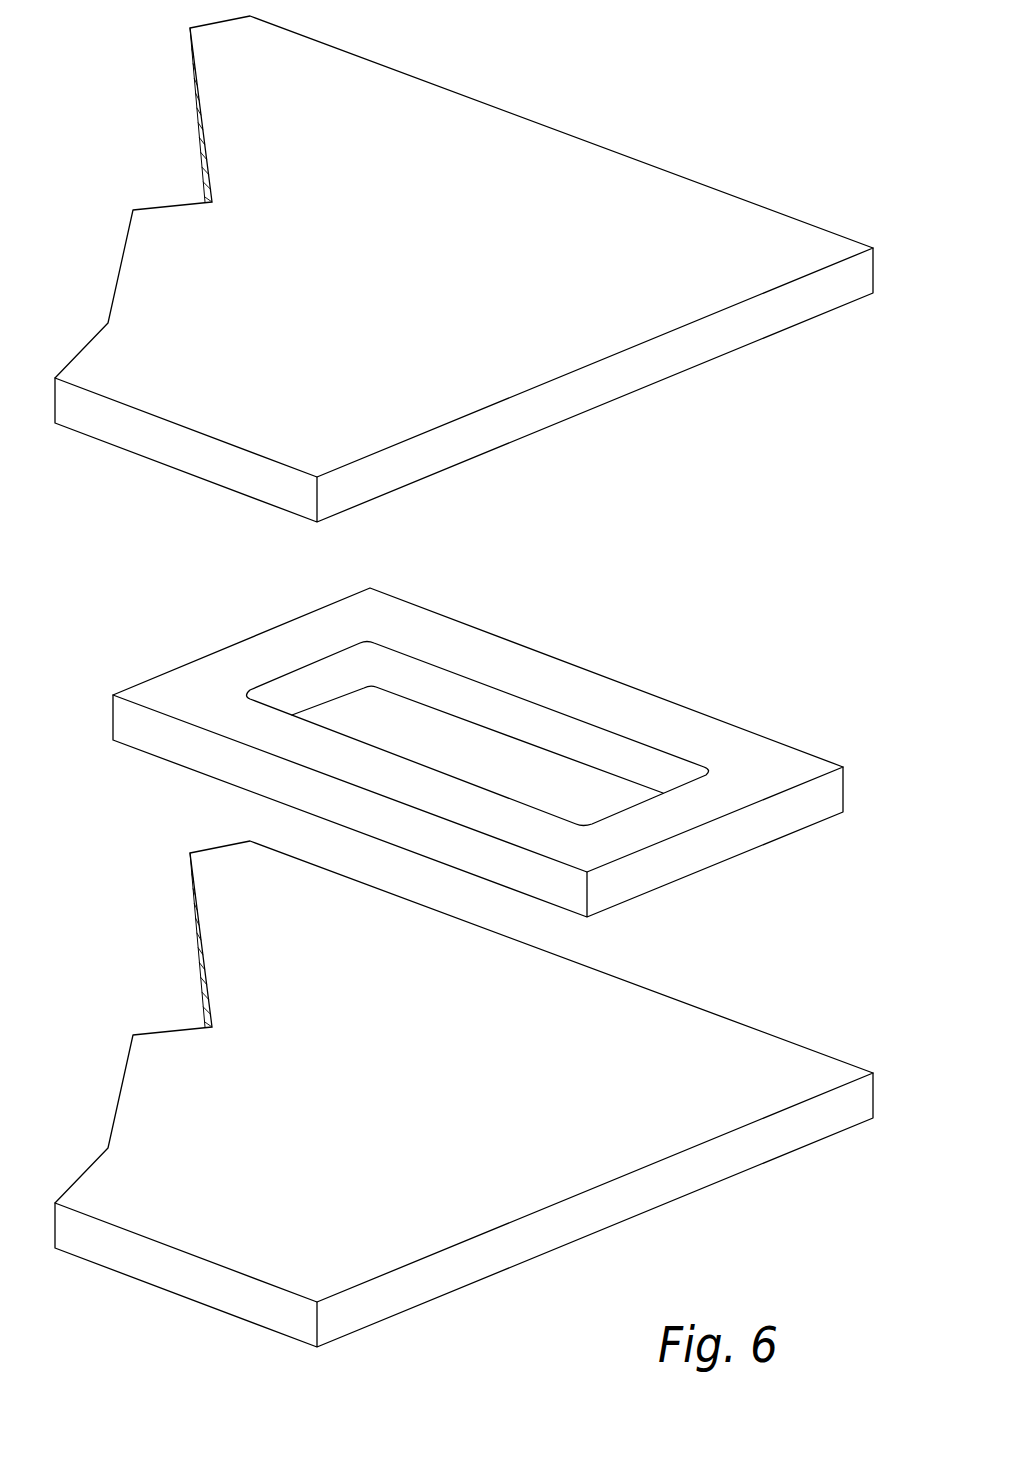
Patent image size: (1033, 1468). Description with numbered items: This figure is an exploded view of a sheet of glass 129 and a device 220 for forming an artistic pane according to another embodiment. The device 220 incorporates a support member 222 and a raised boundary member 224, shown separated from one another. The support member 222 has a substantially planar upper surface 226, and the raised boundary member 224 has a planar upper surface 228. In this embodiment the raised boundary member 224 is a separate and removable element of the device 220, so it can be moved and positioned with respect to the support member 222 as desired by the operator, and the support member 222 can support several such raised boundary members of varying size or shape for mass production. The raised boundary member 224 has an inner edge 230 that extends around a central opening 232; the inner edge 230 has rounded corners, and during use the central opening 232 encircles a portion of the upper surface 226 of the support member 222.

The sheet of glass 129 is at (617, 150).
The device 220 is at (762, 608).
The support member 222 is at (464, 1094).
The raised boundary member 224 is at (508, 726).
The upper surface 226 is at (464, 1071).
The upper surface 228 is at (755, 758).
The inner edge 230 is at (508, 710).
The central opening 232 is at (375, 715).